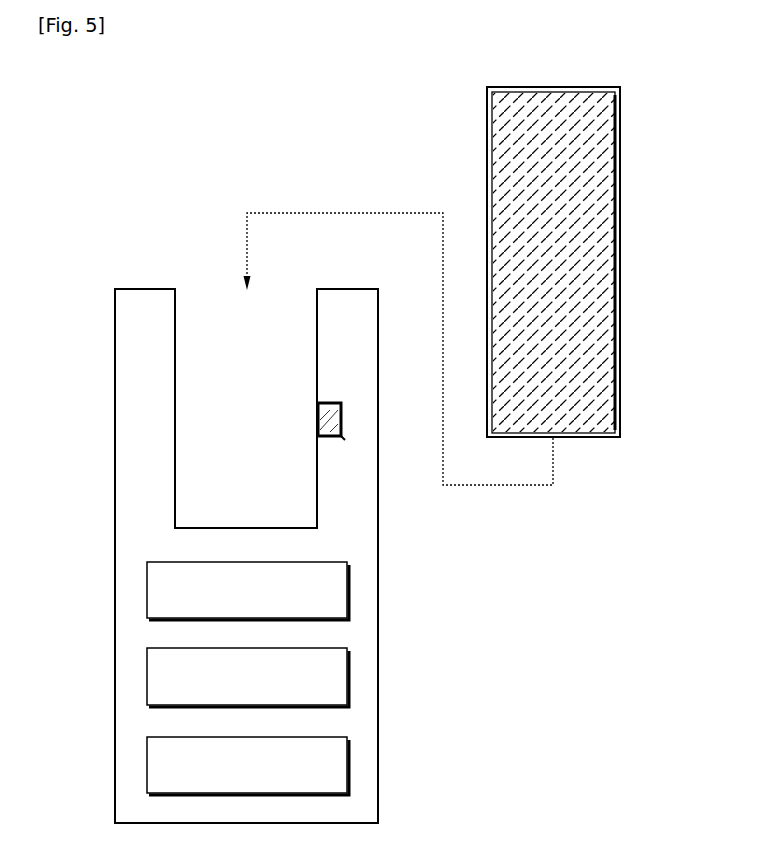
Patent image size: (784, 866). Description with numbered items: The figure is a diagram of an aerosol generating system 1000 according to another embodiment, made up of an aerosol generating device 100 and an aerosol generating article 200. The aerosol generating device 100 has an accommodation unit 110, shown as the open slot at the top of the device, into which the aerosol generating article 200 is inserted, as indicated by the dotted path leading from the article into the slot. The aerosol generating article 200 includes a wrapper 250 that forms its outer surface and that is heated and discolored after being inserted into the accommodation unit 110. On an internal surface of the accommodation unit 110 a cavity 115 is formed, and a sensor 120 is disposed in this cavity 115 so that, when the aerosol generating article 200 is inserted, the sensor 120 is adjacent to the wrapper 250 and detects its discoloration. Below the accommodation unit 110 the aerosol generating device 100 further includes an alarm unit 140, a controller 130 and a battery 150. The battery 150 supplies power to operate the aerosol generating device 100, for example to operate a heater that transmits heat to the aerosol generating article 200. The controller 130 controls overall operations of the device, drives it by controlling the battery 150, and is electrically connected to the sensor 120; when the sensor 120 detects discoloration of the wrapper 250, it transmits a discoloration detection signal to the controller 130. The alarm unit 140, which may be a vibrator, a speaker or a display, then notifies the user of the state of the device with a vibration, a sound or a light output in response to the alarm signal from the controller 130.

The aerosol generating system 1000 is at (390, 66).
The aerosol generating device 100 is at (410, 604).
The accommodation unit 110 is at (175, 391).
The cavity 115 is at (343, 438).
The sensor 120 is at (342, 423).
The controller 130 is at (147, 682).
The alarm unit 140 is at (147, 588).
The battery 150 is at (147, 765).
The aerosol generating article 200 is at (638, 128).
The wrapper 250 is at (620, 371).